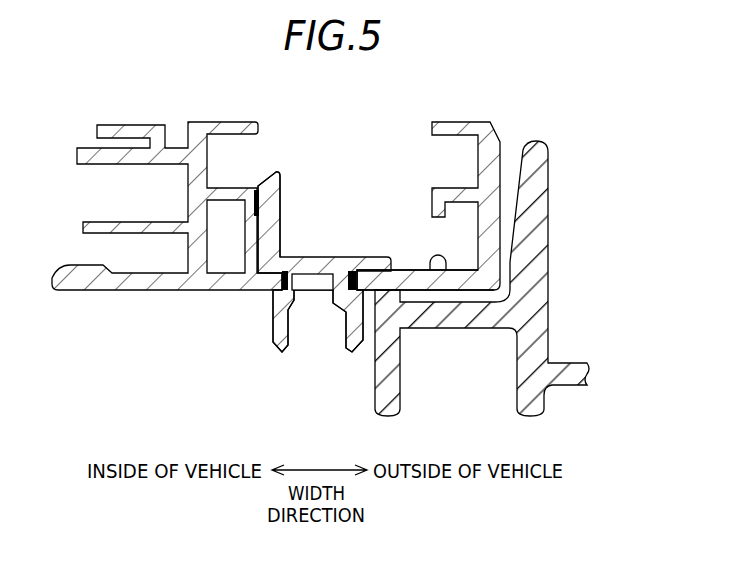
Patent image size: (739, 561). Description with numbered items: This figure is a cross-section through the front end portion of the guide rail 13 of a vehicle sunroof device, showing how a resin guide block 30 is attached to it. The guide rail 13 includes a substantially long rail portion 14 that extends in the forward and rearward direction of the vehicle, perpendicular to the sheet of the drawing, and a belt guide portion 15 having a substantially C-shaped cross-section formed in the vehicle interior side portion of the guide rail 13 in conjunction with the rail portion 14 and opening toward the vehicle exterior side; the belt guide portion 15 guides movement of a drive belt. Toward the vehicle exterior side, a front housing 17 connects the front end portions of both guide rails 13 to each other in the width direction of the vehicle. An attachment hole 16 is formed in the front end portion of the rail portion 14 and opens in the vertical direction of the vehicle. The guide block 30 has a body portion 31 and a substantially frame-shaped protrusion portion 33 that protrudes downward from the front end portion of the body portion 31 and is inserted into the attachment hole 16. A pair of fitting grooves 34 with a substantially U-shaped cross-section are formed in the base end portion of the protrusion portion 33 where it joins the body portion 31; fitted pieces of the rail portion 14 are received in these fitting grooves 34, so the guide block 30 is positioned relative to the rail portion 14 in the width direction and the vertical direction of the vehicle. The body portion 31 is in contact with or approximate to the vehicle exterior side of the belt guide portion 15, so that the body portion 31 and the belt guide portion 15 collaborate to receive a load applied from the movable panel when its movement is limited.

The guide rail 13 is at (492, 129).
The rail portion 14 is at (410, 270).
The belt guide portion 15 is at (241, 188).
The attachment hole 16 is at (335, 277).
The front housing 17 is at (549, 229).
The guide block 30 is at (283, 193).
The body portion 31 is at (311, 258).
The protrusion portion 33 is at (272, 323).
The fitting grooves 34 is at (353, 273).